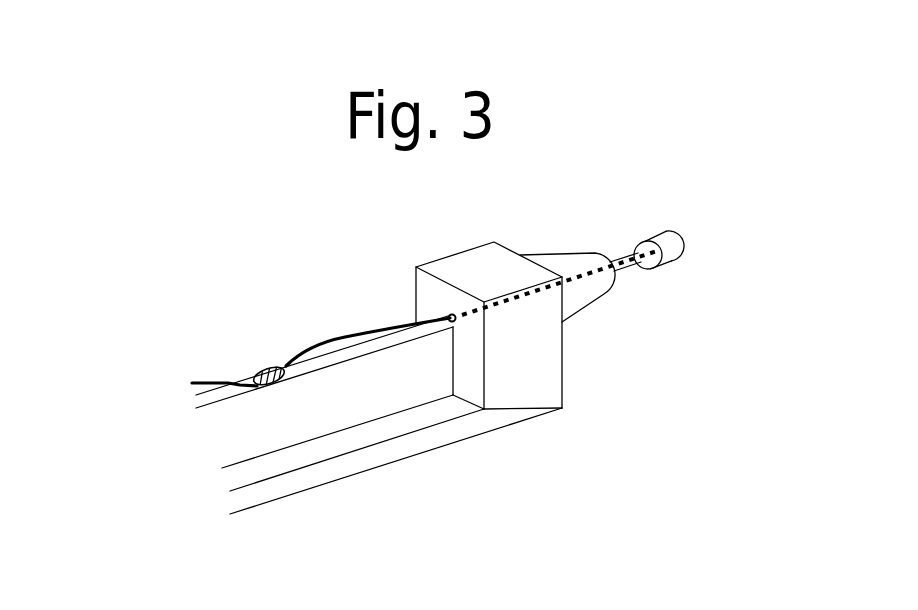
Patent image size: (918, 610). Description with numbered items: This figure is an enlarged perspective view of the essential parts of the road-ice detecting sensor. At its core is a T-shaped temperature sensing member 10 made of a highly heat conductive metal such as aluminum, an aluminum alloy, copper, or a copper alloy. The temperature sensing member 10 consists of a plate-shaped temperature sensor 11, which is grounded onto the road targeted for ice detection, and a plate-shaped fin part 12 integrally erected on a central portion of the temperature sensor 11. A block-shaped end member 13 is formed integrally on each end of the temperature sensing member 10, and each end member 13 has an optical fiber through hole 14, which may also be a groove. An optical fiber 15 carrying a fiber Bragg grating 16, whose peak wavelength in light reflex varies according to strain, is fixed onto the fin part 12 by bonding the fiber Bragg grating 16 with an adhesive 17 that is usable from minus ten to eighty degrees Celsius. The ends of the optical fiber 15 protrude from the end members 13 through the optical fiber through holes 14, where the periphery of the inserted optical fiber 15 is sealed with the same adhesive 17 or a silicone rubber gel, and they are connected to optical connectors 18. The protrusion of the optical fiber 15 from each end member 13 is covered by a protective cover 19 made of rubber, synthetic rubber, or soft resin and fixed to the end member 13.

The temperature sensing member 10 is at (478, 427).
The temperature sensor 11 is at (352, 465).
The fin part 12 is at (357, 407).
The end member 13 is at (527, 373).
The optical fiber through hole 14 is at (449, 315).
The optical fiber 15 is at (337, 339).
The fiber Bragg grating 16 is at (261, 372).
The adhesive 17 is at (275, 365).
The optical connector 18 is at (670, 264).
The protective cover 19 is at (566, 262).